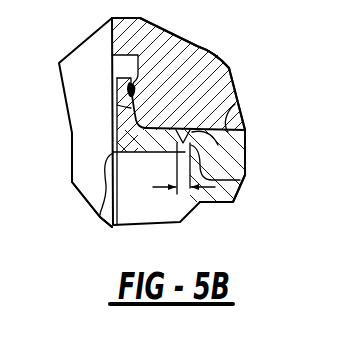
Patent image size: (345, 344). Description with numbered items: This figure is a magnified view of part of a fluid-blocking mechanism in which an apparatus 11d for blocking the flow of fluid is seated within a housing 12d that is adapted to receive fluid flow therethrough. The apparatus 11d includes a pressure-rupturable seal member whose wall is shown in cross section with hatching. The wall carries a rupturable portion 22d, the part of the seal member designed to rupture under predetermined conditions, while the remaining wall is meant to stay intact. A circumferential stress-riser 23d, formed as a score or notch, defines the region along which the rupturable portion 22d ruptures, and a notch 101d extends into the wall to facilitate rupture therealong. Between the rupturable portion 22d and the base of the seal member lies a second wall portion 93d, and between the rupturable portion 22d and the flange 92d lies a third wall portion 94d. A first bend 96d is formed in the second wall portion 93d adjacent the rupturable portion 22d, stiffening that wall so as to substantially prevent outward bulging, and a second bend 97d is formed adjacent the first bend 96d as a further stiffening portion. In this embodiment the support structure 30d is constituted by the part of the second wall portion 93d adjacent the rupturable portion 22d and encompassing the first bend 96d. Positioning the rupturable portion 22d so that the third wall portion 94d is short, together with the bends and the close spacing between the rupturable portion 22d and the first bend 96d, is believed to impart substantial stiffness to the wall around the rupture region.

The apparatus for blocking the flow of fluid 11d is at (62, 32).
The support structure 30d is at (153, 64).
The housing 12d is at (206, 46).
The notch 101d is at (229, 68).
The first bend 96d is at (235, 104).
The second bend 97d is at (205, 153).
The second wall portion 93d is at (245, 183).
The stress-riser 23d is at (177, 194).
The rupturable portion 22d is at (164, 177).
The third wall portion 94d is at (100, 217).
The flange 92d is at (131, 108).